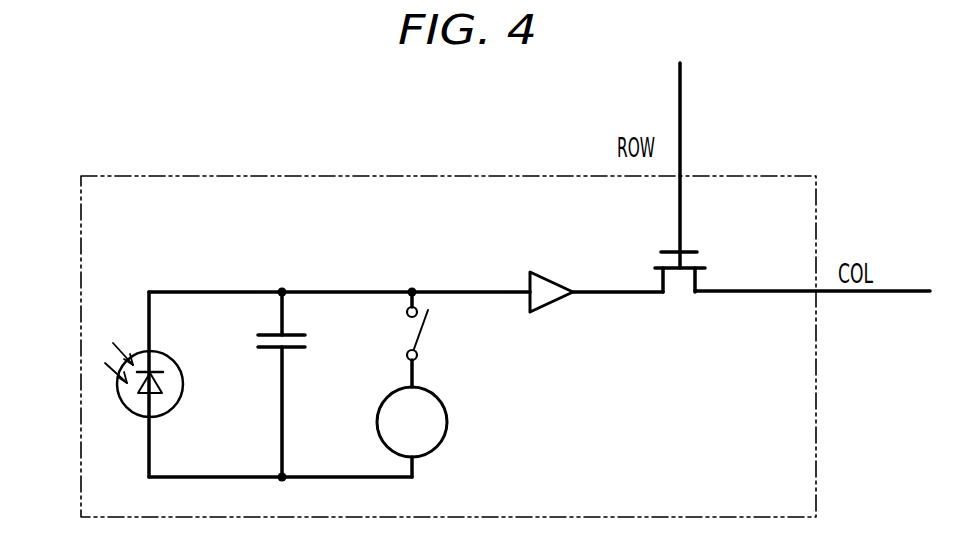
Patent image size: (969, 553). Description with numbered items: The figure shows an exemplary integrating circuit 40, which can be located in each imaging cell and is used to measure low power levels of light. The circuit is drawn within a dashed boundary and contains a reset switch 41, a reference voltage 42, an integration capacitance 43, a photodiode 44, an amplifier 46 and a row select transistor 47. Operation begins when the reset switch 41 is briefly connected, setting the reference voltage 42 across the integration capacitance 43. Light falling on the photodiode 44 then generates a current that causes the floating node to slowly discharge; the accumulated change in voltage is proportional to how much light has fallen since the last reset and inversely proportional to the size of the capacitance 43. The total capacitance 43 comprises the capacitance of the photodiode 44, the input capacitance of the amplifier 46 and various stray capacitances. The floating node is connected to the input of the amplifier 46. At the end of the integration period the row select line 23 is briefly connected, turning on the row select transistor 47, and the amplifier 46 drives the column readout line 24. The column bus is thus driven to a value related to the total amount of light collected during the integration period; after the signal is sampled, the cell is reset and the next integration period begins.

The row select line 23 is at (680, 108).
The column readout line 24 is at (878, 294).
The integrating circuit 40 is at (756, 176).
The reset switch 41 is at (423, 326).
The reference voltage 42 is at (448, 420).
The integration capacitance 43 is at (260, 350).
The photodiode 44 is at (121, 405).
The amplifier 46 is at (556, 300).
The row select transistor 47 is at (705, 268).